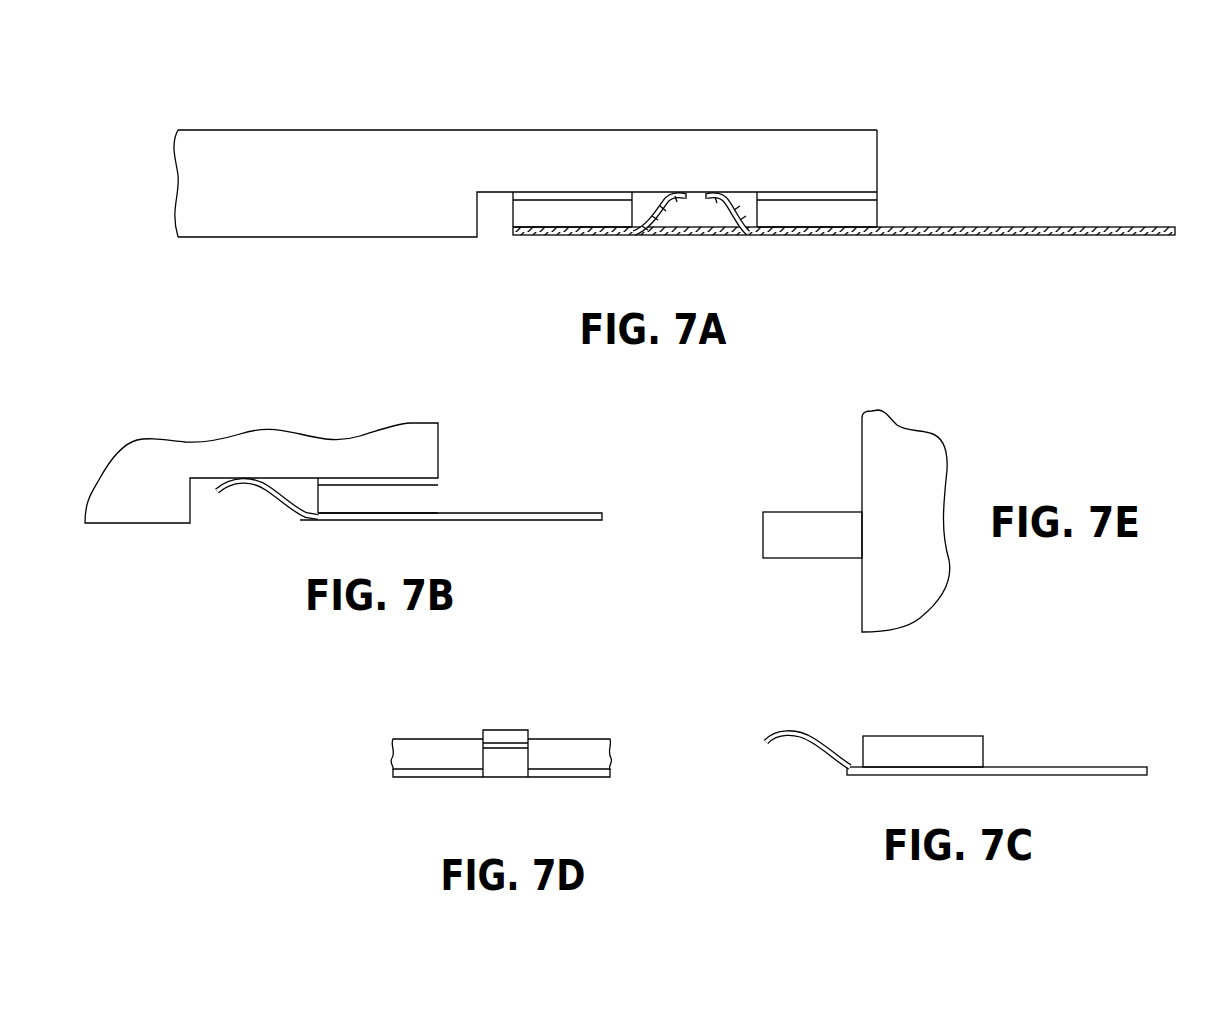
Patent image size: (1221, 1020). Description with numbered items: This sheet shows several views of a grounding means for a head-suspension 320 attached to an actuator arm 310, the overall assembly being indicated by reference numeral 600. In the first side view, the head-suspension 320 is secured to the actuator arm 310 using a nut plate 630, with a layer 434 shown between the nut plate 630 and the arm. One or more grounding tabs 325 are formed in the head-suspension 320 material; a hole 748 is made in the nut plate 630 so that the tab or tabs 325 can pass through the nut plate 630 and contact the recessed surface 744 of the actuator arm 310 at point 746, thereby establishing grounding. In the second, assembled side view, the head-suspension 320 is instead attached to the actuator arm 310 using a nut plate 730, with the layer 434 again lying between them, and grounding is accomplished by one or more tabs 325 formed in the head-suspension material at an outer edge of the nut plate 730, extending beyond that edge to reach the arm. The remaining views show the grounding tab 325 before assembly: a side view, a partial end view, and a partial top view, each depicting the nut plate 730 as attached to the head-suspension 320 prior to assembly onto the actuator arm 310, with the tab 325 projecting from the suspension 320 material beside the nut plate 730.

In FIG. 7A, the actuator arm 310 is at (525, 183).
In FIG. 7B, the actuator arm 310 is at (261, 473).
In FIG. 7A, the head-suspension 320 is at (1105, 226).
In FIG. 7B, the head-suspension 320 is at (560, 513).
In FIG. 7D, the head-suspension 320 is at (420, 777).
In FIG. 7C, the head-suspension 320 is at (1107, 767).
In FIG. 7A, the grounding tab 325 is at (727, 212).
In FIG. 7B, the grounding tab 325 is at (270, 505).
In FIG. 7E, the grounding tab 325 is at (810, 521).
In FIG. 7D, the grounding tab 325 is at (505, 765).
In FIG. 7C, the grounding tab 325 is at (815, 755).
In FIG. 7A, the adhesive layer 434 is at (862, 196).
In FIG. 7B, the adhesive layer 434 is at (425, 481).
In FIG. 7A, the assembly 600 is at (1000, 120).
In FIG. 7A, the nut plate 630 is at (868, 212).
In FIG. 7B, the nut plate 730 is at (430, 498).
In FIG. 7E, the nut plate 730 is at (906, 521).
In FIG. 7D, the nut plate 730 is at (430, 745).
In FIG. 7C, the nut plate 730 is at (975, 752).
In FIG. 7A, the recessed surface 744 is at (697, 192).
In FIG. 7A, the point 746 is at (673, 192).
In FIG. 7A, the hole 748 is at (683, 215).